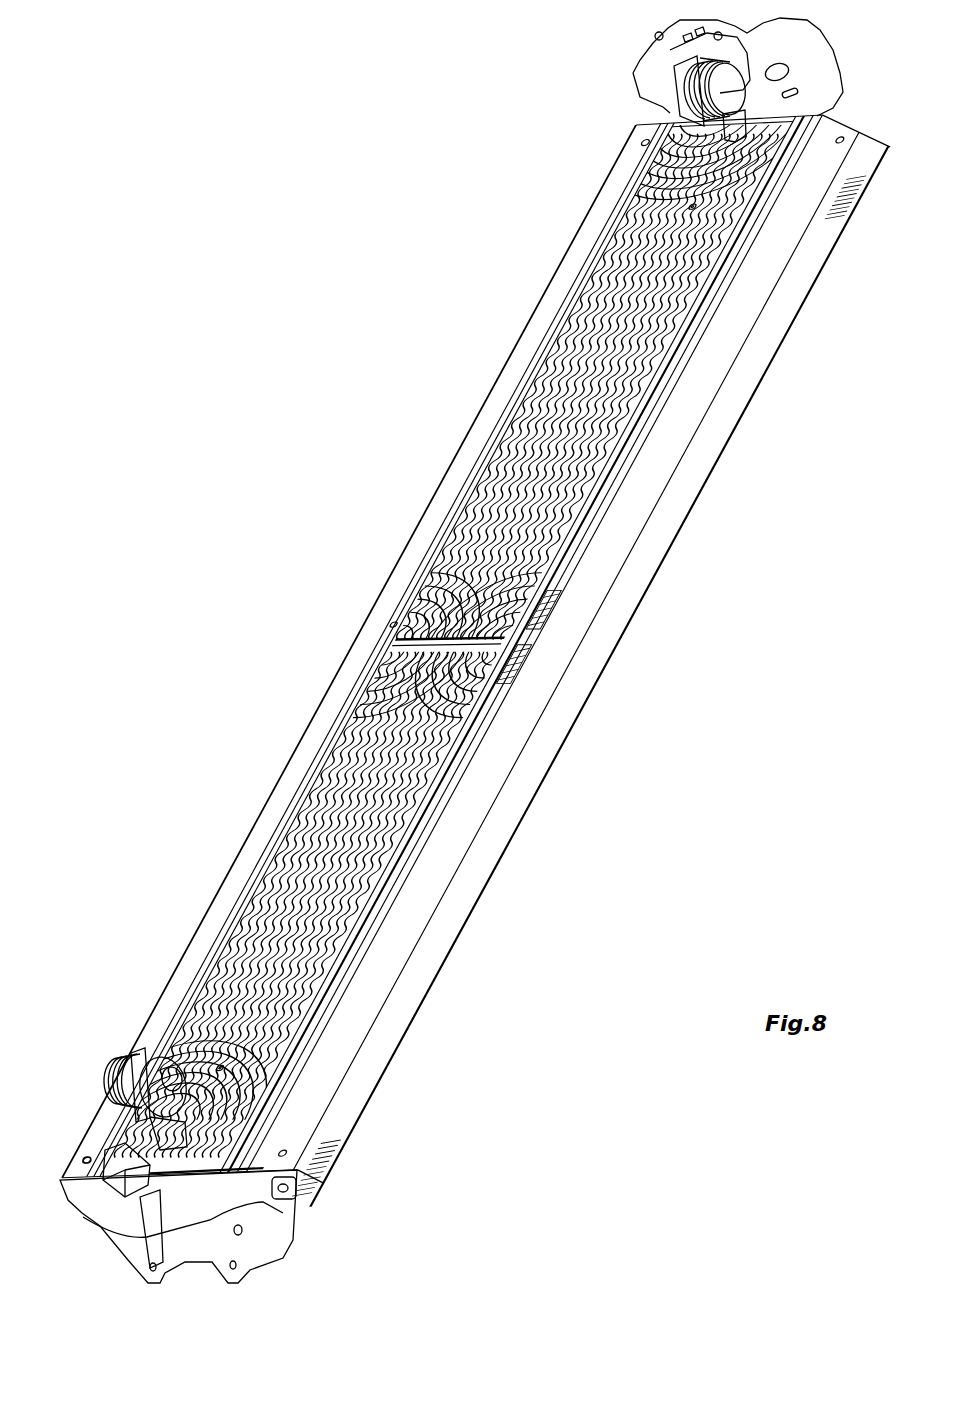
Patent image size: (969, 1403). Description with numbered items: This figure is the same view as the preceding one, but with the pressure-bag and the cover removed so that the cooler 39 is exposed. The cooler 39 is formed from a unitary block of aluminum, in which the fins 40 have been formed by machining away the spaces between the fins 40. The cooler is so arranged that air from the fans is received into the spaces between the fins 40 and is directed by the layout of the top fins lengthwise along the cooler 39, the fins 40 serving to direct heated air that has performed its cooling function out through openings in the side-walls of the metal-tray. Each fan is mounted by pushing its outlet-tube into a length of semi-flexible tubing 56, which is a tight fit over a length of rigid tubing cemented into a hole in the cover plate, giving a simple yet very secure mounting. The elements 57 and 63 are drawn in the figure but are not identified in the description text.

The cooler 39 is at (284, 905).
The fins 40 is at (569, 374).
The semi-flexible tubing 56 is at (176, 1150).
The fluid fitting 57 is at (158, 1120).
The vent slots 63 is at (529, 636).